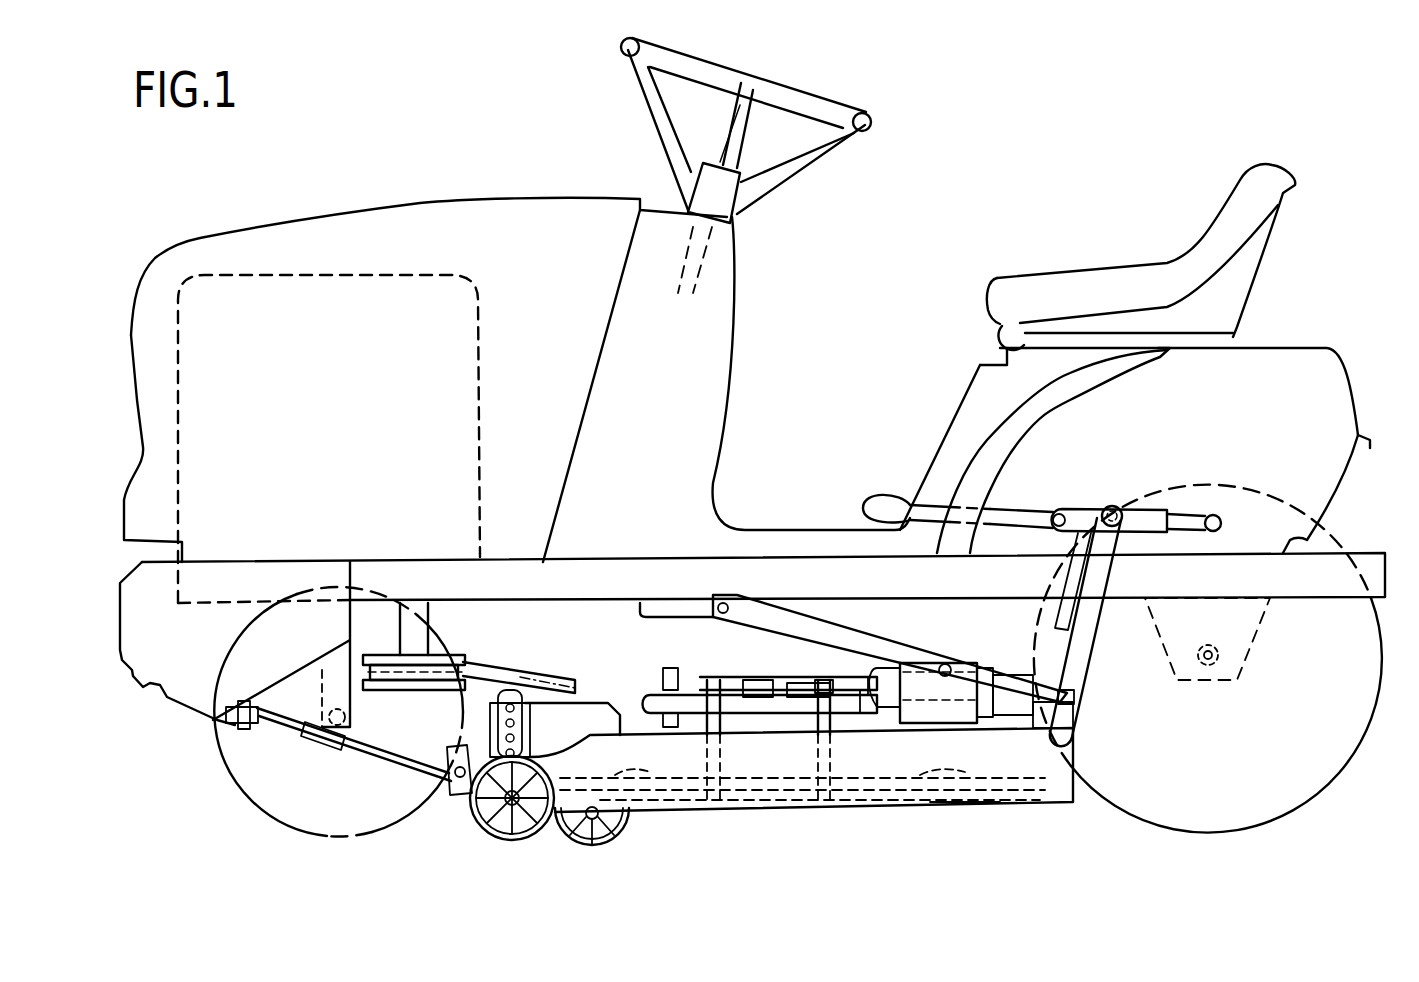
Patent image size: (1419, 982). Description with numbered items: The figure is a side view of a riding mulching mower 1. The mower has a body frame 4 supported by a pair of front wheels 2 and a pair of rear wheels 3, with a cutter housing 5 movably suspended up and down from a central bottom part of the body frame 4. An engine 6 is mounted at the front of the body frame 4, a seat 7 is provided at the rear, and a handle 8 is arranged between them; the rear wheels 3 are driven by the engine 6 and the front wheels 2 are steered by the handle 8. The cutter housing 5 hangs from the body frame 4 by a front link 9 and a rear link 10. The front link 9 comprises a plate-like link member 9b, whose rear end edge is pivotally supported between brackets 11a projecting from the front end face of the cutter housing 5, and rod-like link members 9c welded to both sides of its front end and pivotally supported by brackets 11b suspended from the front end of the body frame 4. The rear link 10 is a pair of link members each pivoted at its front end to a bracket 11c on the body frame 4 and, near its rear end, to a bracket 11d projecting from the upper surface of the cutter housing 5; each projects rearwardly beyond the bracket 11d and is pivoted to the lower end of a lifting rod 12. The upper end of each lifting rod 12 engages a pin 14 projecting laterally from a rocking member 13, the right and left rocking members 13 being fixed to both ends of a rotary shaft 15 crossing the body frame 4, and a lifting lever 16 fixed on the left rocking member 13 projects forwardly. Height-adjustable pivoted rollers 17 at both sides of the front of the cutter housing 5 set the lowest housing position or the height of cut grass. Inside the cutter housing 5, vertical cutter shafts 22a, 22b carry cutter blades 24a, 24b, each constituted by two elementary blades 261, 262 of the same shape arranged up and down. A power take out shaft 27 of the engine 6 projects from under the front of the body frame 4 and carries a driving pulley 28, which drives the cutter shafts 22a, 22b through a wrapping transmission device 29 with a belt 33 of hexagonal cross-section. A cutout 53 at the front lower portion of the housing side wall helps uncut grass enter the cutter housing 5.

The mulching mower 1 is at (437, 150).
The front wheel 2 is at (253, 807).
The rear wheel 3 is at (1158, 830).
The body frame 4 is at (1373, 552).
The cutter housing 5 is at (1052, 787).
The engine 6 is at (485, 298).
The seat 7 is at (1090, 295).
The handle 8 is at (828, 97).
The front link 9 is at (330, 753).
The link member 9b is at (400, 760).
The rod-like link member 9c is at (267, 727).
The rear link 10 is at (893, 640).
The bracket 11a is at (447, 793).
The bracket 11b is at (178, 698).
The bracket 11c is at (652, 617).
The bracket 11d is at (907, 712).
The lifting rod 12 is at (1100, 637).
The rocking member 13 is at (1163, 495).
The pin 14 is at (1103, 507).
The rotary shaft 15 is at (1257, 517).
The lifting lever 16 is at (920, 500).
The roller 17 is at (532, 845).
The cutter shaft 22a is at (737, 813).
The cutter shaft 22b is at (812, 820).
The cutter blade 24a is at (612, 772).
The cutter blade 24b is at (945, 775).
The elementary blade 261 is at (1073, 758).
The elementary blade 262 is at (960, 807).
The power take out shaft 27 is at (430, 610).
The driving pulley 28 is at (413, 693).
The wrapping transmission device 29 is at (705, 679).
The belt 33 is at (530, 677).
The cutout 53 is at (593, 845).